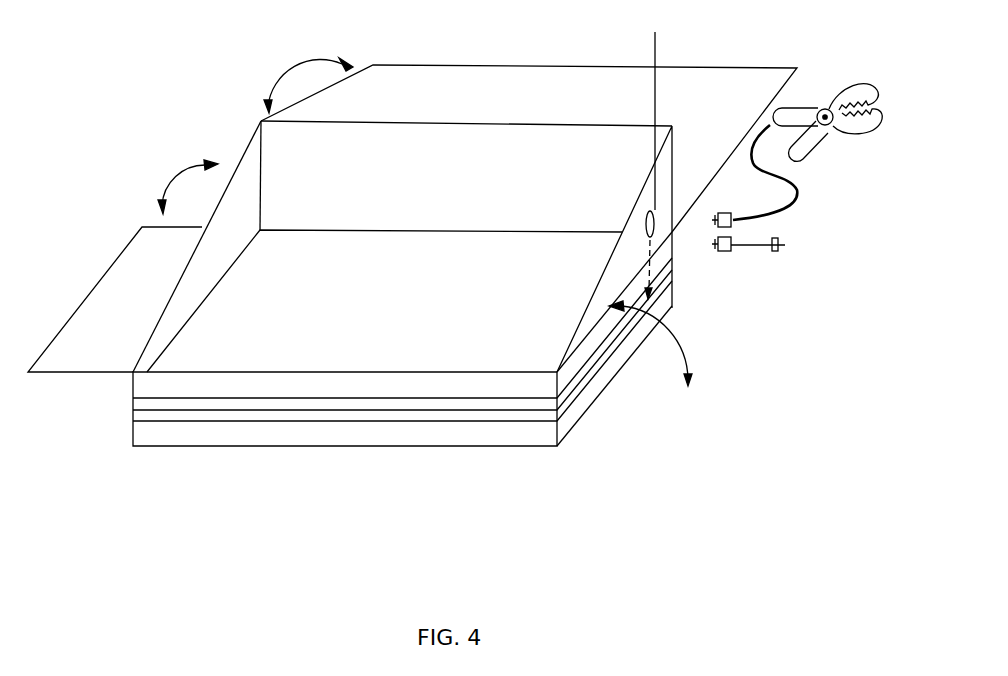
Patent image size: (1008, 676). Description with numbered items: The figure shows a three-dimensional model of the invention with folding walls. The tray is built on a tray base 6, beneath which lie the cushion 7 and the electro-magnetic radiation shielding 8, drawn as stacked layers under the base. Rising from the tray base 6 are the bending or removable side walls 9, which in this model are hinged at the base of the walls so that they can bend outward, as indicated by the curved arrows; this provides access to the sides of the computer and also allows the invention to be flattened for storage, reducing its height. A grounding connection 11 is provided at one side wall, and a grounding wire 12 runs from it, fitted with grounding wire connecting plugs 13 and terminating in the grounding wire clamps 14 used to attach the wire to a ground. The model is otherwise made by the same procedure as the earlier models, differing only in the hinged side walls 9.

The tray base 6 is at (384, 301).
The cushion 7 is at (580, 422).
The electro-magnetic radiation shielding 8 is at (133, 411).
The bending or removable side walls 9 is at (412, 222).
The grounding connection 11 is at (655, 32).
The grounding wire 12 is at (752, 242).
The grounding wire connecting plugs 13 is at (770, 251).
The grounding wire clamps 14 is at (858, 78).